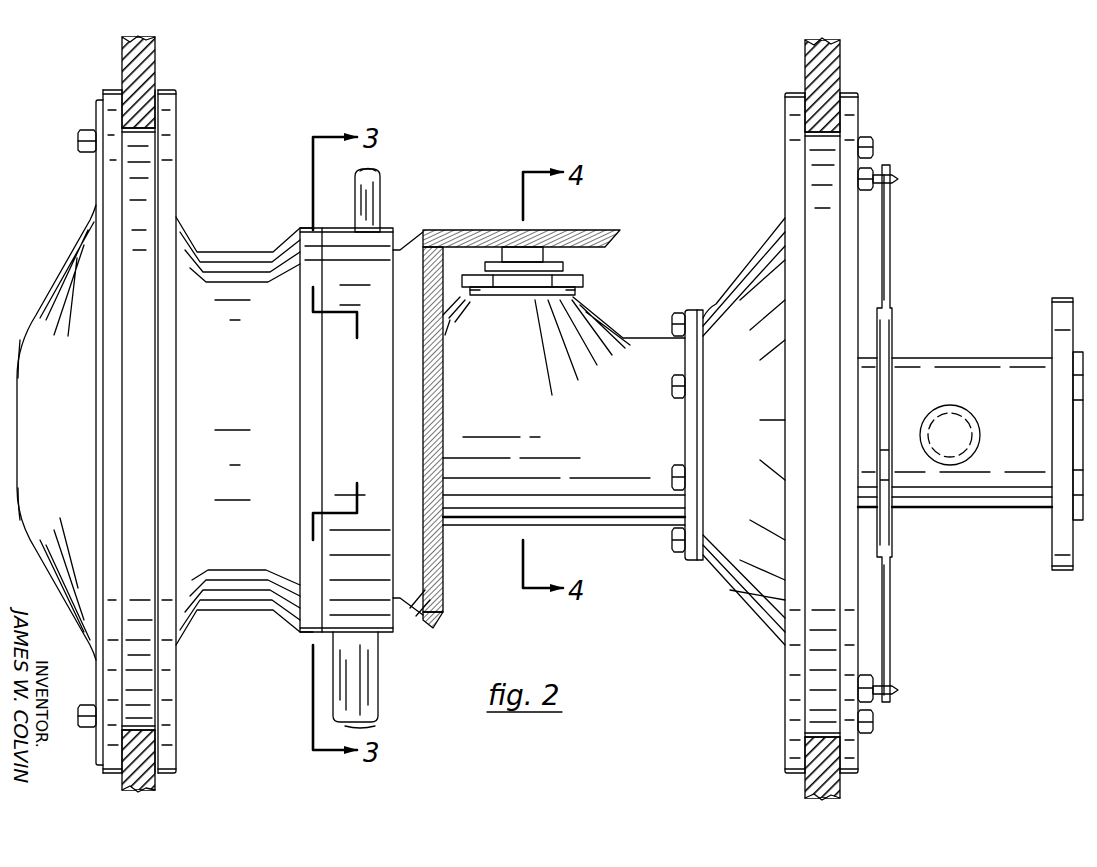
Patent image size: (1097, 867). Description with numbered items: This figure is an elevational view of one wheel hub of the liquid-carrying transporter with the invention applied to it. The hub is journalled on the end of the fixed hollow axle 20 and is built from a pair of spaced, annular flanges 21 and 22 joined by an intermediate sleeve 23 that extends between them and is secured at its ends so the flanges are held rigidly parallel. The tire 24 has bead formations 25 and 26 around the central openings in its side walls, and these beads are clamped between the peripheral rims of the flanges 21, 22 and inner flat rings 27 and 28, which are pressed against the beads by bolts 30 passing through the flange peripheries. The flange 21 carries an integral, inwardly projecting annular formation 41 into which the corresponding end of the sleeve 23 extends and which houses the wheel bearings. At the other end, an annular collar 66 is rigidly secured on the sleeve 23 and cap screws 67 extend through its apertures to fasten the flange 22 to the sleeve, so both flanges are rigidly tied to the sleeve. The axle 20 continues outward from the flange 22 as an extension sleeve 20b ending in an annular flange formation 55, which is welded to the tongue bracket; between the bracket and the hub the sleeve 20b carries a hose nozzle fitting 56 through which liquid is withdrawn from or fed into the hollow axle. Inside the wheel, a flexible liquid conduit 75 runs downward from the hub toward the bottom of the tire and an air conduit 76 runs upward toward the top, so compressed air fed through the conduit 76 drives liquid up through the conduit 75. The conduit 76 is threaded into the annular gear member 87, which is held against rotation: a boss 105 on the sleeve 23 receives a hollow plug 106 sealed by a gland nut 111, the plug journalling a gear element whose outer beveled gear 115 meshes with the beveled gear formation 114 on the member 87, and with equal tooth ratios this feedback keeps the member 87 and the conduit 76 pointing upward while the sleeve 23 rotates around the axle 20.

The fixed tubular axle 20 is at (1000, 358).
The extension sleeve 20b is at (990, 508).
The annular flange 21 is at (110, 90).
The annular flange 22 is at (862, 98).
The intermediate sleeve 23 is at (660, 338).
The tire 24 is at (145, 62).
The bead formation 25 is at (152, 78).
The bead formation 26 is at (848, 64).
The inner flat ring 27 is at (178, 108).
The inner flat ring 28 is at (792, 92).
The bolts 30 is at (88, 134).
The annular formation 41 is at (235, 610).
The annular flange formation 55 is at (1052, 310).
The hose nozzle fitting 56 is at (962, 414).
The annular collar 66 is at (694, 563).
The cap screws 67 is at (672, 548).
The liquid conduit 75 is at (380, 712).
The air conduit 76 is at (382, 186).
The annular gear member 87 is at (344, 228).
The boss 105 is at (597, 312).
The hollow plug 106 is at (586, 281).
The gland nut 111 is at (565, 265).
The beveled gear formation 114 is at (403, 248).
The beveled gear 115 is at (602, 230).